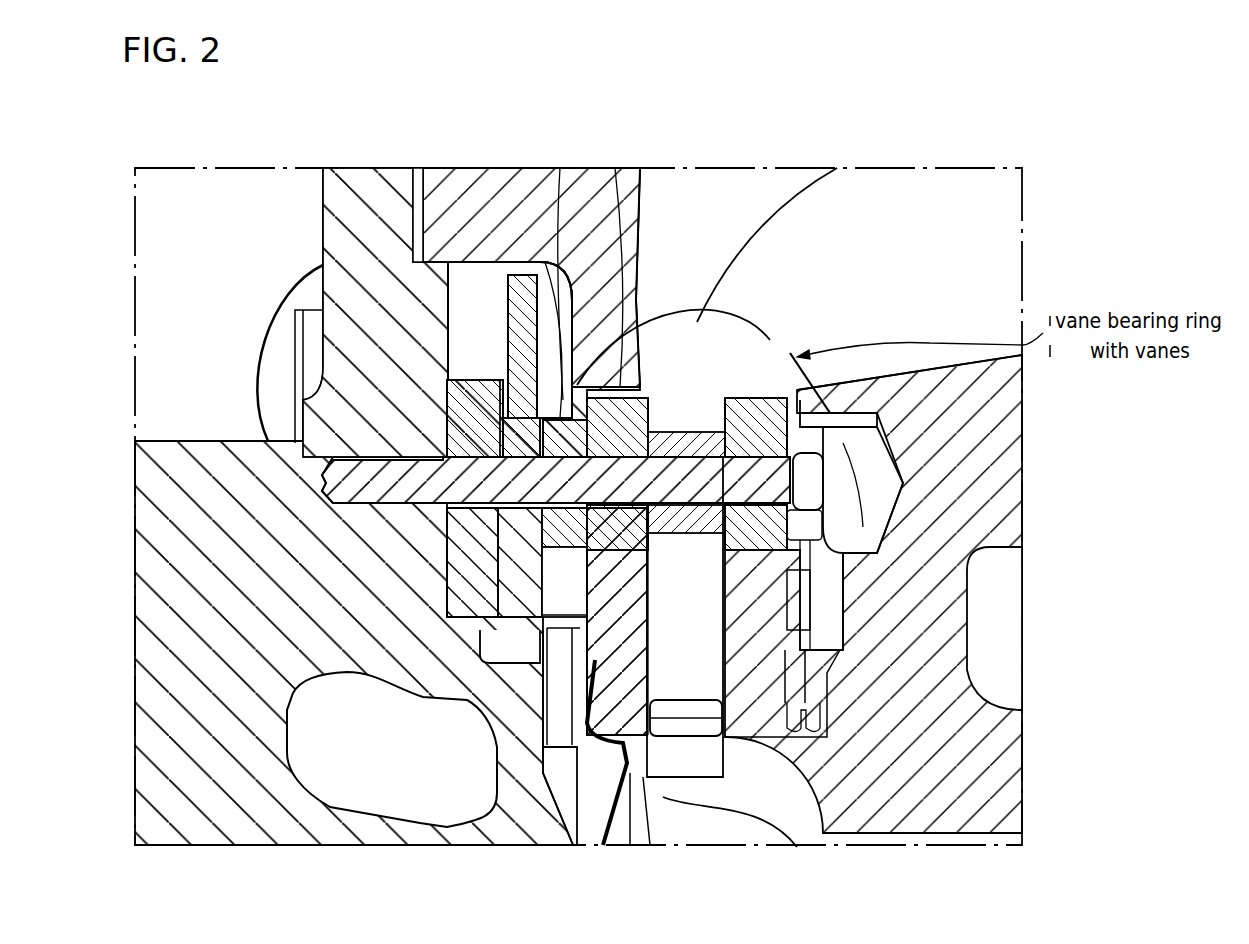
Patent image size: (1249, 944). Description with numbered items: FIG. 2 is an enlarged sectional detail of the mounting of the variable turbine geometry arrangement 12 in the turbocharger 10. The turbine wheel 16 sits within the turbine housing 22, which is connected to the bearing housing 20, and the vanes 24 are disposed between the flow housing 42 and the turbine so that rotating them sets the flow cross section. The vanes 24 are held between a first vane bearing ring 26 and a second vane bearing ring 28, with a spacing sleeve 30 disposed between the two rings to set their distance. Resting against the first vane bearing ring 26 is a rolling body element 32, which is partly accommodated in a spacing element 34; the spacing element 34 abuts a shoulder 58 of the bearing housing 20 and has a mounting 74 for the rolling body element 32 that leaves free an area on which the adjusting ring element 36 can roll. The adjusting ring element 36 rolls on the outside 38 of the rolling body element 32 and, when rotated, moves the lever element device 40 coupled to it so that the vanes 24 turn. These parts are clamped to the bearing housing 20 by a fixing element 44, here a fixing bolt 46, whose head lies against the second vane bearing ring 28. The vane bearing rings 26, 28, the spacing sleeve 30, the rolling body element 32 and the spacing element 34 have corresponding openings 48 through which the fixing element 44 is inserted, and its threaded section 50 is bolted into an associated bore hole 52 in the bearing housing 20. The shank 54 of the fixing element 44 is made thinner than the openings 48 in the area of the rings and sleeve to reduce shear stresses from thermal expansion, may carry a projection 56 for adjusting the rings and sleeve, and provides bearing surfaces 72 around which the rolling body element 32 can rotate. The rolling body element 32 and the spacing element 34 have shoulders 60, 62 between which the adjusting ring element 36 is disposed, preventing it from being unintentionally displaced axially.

The turbocharger 10 is at (1033, 592).
The variable turbine geometry arrangement 12 is at (775, 306).
The turbine wheel 16 is at (730, 825).
The bearing housing 20 is at (168, 573).
The turbine housing 22 is at (1000, 505).
The vanes 24 is at (680, 680).
The first vane bearing ring 26 is at (620, 345).
The second vane bearing ring 28 is at (738, 400).
The spacing sleeve 30 is at (710, 432).
The rolling body element 32 is at (560, 168).
The spacing element 34 is at (463, 422).
The adjusting ring element 36 is at (547, 320).
The outside of the rolling body element 38 is at (488, 384).
The lever element device 40 is at (522, 294).
The flow housing 42 is at (747, 192).
The fixing element 44 is at (832, 429).
The fixing bolt 46 is at (250, 446).
The openings 48 is at (652, 440).
The threaded section 50 is at (390, 505).
The bore hole 52 is at (374, 481).
The shank 54 is at (497, 510).
The projection 56 is at (718, 512).
The shoulder of the bearing housing 58 is at (545, 615).
The shoulder of the rolling body element 60 is at (617, 377).
The shoulder of the spacing element 62 is at (430, 394).
The bearing surfaces 72 is at (578, 515).
The mounting 74 is at (530, 540).